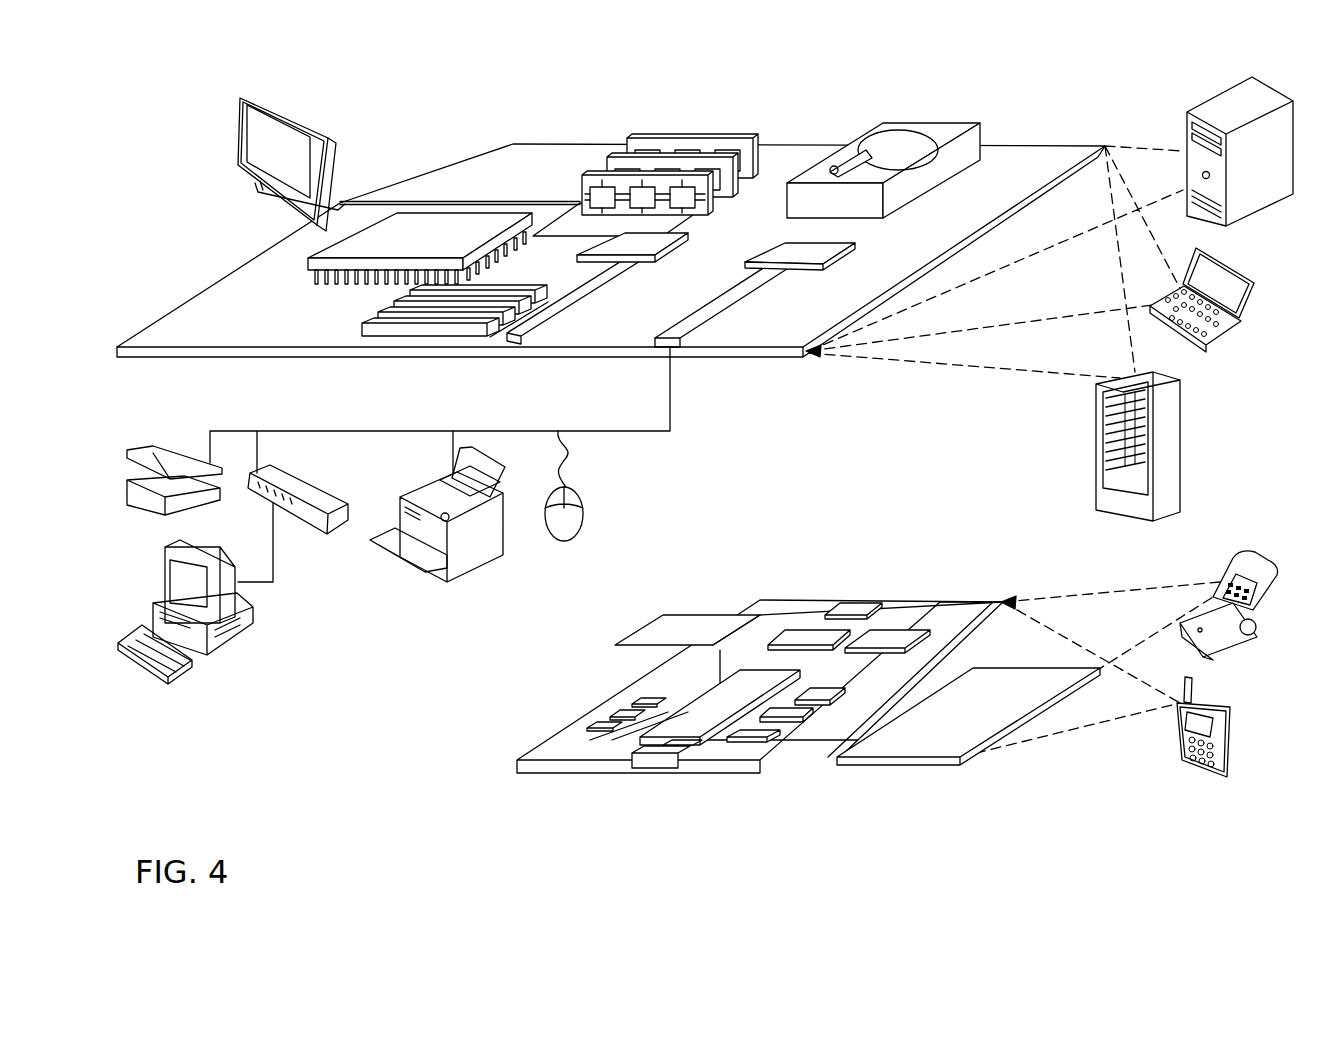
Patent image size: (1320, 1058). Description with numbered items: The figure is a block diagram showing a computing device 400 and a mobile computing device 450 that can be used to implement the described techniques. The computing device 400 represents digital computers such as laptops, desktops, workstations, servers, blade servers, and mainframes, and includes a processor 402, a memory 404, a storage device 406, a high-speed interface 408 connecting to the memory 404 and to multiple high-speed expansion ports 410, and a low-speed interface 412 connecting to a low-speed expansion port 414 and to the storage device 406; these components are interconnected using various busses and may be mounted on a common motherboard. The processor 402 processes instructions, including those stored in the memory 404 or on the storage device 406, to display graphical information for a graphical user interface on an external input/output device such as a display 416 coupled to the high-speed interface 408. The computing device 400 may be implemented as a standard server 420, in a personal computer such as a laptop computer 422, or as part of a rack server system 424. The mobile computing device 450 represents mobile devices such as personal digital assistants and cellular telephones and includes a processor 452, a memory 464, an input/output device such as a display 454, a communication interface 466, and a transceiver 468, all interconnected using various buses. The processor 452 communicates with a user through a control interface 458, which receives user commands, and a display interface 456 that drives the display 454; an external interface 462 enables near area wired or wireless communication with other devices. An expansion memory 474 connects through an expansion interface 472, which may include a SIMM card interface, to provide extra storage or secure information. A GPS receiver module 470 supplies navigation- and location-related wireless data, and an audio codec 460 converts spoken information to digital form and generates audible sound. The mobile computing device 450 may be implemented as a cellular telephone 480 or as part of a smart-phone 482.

The computing device 400 is at (441, 123).
The processor 402 is at (307, 259).
The memory 404 is at (642, 140).
The storage device 406 is at (876, 127).
The high-speed interface 408 is at (608, 246).
The high-speed expansion ports 410 is at (383, 318).
The low-speed interface 412 is at (784, 245).
The low-speed expansion port 414 is at (683, 348).
The display 416 is at (248, 92).
The standard server 420 is at (1188, 132).
The laptop computer 422 is at (1206, 348).
The rack server system 424 is at (1097, 471).
The mobile computing device 450 is at (497, 766).
The processor 452 is at (690, 728).
The display 454 is at (927, 748).
The display interface 456 is at (757, 737).
The control interface 458 is at (798, 718).
The audio codec 460 is at (820, 692).
The external interface 462 is at (657, 765).
The memory 464 is at (586, 725).
The communication interface 466 is at (812, 636).
The transceiver 468 is at (890, 637).
The GPS receiver module 470 is at (863, 605).
The expansion interface 472 is at (745, 612).
The expansion memory 474 is at (680, 615).
The cellular telephone 480 is at (1241, 558).
The smart-phone 482 is at (1178, 730).